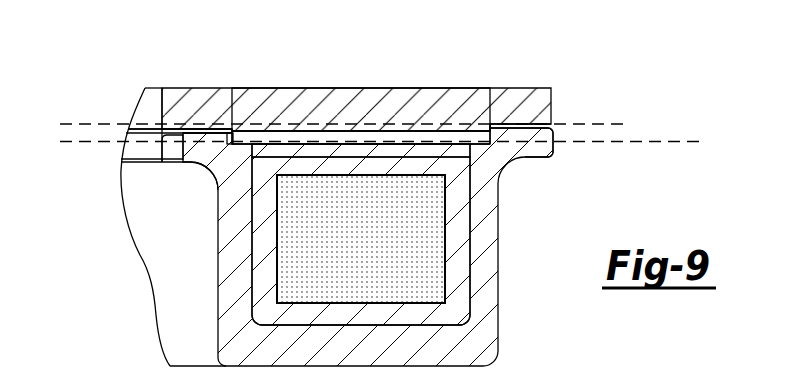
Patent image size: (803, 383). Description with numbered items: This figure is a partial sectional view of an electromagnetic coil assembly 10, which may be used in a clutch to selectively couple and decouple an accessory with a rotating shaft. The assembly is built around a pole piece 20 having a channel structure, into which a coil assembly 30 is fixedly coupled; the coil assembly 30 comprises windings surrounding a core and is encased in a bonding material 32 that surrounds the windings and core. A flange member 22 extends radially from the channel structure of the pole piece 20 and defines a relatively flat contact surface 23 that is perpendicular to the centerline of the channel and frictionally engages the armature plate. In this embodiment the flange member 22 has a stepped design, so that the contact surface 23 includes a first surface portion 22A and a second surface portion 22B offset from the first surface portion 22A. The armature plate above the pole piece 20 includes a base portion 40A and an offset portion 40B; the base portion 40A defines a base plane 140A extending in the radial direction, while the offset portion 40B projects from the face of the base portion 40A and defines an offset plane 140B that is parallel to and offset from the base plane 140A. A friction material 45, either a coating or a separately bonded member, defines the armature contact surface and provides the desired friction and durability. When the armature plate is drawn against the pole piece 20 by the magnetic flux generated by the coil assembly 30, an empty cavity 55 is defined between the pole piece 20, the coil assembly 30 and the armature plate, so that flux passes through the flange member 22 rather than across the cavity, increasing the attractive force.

The electromagnetic coil assembly 10 is at (112, 58).
The pole piece 20 is at (470, 333).
The flange member 22 is at (527, 148).
The first surface portion 22A is at (183, 139).
The second surface portion 22B is at (233, 143).
The contact surface 23 is at (519, 118).
The coil assembly 30 is at (365, 268).
The bonding material 32 is at (458, 227).
The base portion 40A is at (545, 105).
The offset portion 40B is at (445, 131).
The friction material 45 is at (285, 141).
The empty cavity 55 is at (386, 150).
The base plane 140A is at (366, 119).
The offset plane 140B is at (404, 137).